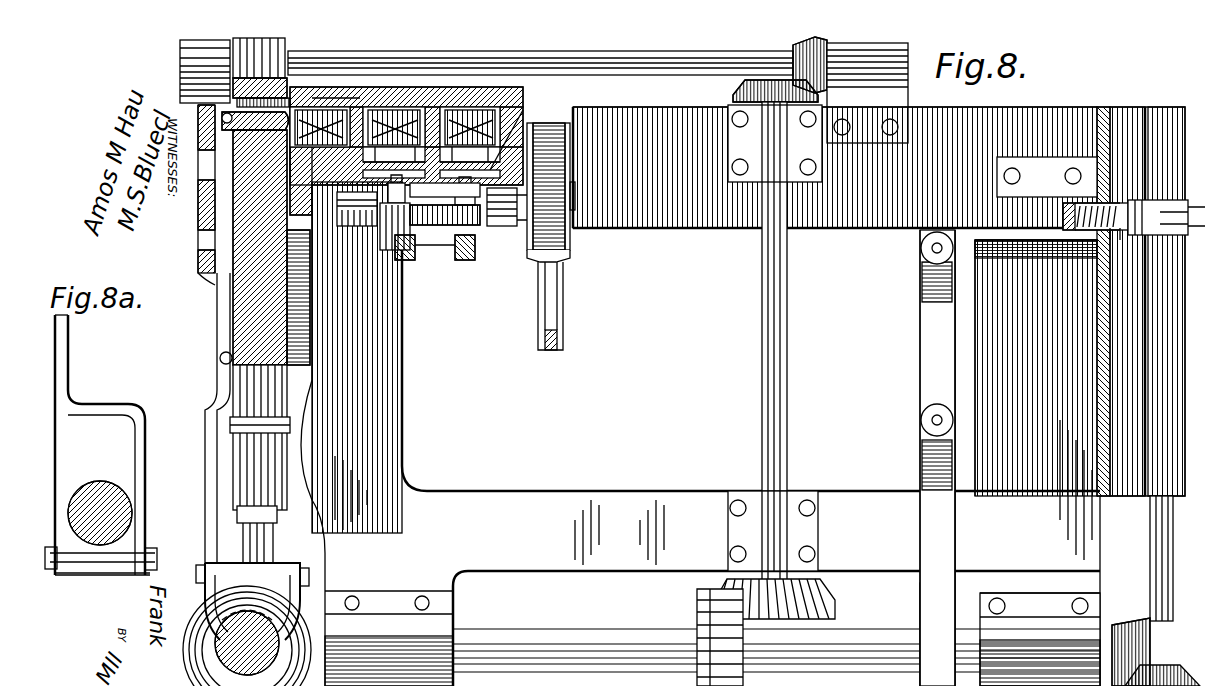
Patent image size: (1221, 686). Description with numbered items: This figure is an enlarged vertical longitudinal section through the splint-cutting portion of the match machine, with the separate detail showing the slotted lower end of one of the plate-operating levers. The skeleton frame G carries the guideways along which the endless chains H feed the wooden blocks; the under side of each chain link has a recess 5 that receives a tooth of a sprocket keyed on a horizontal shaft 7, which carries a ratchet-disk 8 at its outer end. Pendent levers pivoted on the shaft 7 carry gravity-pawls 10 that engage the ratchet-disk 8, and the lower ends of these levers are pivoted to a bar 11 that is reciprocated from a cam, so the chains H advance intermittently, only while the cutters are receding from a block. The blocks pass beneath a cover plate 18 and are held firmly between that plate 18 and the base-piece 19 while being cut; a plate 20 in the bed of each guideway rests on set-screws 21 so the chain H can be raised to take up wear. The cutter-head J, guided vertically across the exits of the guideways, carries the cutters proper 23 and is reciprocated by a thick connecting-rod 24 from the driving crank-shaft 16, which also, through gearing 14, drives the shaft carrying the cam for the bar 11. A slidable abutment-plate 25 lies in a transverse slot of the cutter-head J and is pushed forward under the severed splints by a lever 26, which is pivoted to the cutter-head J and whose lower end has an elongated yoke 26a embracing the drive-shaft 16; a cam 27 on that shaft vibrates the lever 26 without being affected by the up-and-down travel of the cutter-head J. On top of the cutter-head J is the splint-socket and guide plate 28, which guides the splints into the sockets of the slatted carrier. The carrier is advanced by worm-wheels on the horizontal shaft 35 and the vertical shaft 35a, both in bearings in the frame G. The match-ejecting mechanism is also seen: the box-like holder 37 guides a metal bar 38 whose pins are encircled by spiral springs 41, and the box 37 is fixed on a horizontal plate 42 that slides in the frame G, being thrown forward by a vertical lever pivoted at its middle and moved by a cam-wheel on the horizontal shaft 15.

In FIG. 8, the recess 5 is at (392, 218).
In FIG. 8, the sprocket-shaft 7 is at (576, 197).
In FIG. 8, the ratchet-disk 8 is at (570, 252).
In FIG. 8, the gravity-pawl 10 is at (570, 134).
In FIG. 8, the bar 11 is at (551, 350).
In FIG. 8, the gearing 14 is at (766, 632).
In FIG. 8, the horizontal shaft 15 is at (612, 636).
In FIG. 8A, the drive-shaft 16 is at (100, 500).
In FIG. 8, the plate 18 is at (400, 93).
In FIG. 8, the base-piece 19 is at (300, 160).
In FIG. 8, the plate 20 is at (300, 150).
In FIG. 8, the set-screw 21 is at (345, 225).
In FIG. 8, the cutter 23 is at (316, 96).
In FIG. 8, the connecting-rod 24 is at (260, 464).
In FIG. 8, the abutment-plate 25 is at (255, 124).
In FIG. 8A, the lever 26 is at (61, 362).
In FIG. 8A, the elongated yoke 26a is at (146, 452).
In FIG. 8A, the cam 27 is at (133, 505).
In FIG. 8, the splint-socket and guide plate 28 is at (222, 88).
In FIG. 8, the horizontal shaft 35 is at (587, 66).
In FIG. 8, the vertical shaft 35a is at (1150, 548).
In FIG. 8, the box-like holder 37 is at (1063, 214).
In FIG. 8, the metal bar 38 is at (1114, 240).
In FIG. 8, the spiral spring 41 is at (1105, 205).
In FIG. 8, the horizontal plate 42 is at (1040, 250).
In FIG. 8, the skeleton frame G is at (743, 396).
In FIG. 8, the endless chain H is at (455, 258).
In FIG. 8, the cutter-head J is at (253, 247).